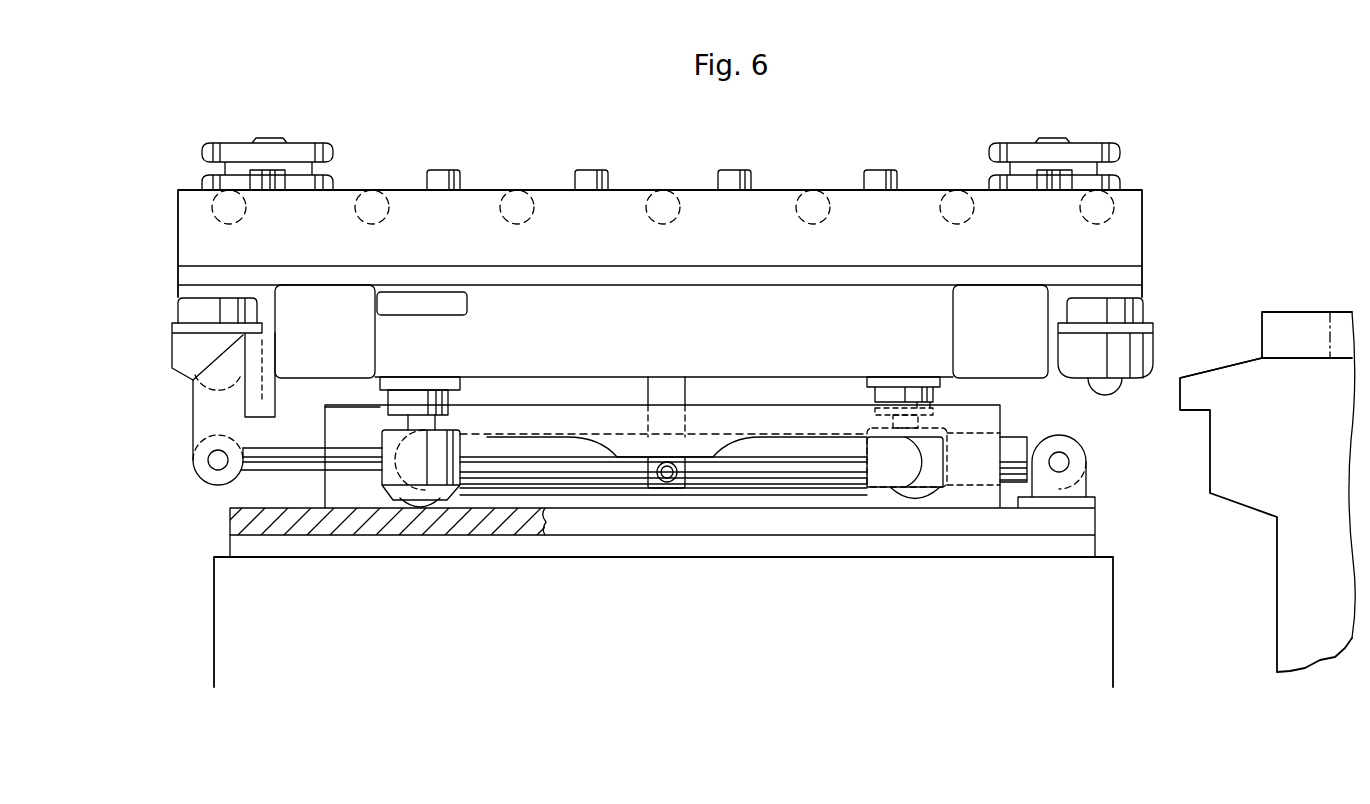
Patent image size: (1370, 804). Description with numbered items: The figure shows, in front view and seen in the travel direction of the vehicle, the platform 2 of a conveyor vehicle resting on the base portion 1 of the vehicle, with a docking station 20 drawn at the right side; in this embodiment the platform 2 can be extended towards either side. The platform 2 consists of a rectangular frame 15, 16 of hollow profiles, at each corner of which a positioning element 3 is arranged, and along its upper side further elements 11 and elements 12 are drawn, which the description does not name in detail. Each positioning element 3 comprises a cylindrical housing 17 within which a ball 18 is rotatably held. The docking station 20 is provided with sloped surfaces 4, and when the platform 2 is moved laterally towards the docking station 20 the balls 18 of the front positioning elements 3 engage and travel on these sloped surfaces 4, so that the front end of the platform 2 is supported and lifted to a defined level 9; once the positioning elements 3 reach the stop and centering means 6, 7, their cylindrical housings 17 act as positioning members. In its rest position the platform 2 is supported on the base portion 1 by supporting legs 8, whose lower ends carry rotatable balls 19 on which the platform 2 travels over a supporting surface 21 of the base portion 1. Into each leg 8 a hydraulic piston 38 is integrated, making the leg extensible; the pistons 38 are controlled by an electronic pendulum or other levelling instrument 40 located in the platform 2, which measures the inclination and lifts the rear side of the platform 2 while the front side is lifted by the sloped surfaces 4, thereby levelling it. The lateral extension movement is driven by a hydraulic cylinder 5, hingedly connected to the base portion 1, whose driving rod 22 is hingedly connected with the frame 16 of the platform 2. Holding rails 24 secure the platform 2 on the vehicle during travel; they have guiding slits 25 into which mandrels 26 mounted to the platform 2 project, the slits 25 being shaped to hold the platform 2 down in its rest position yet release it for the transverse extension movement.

The base portion 1 is at (663, 561).
The platform 2 is at (1148, 289).
The positioning elements 3 is at (165, 317).
The sloped surfaces 4 is at (1228, 362).
The hydraulic cylinder 5 is at (510, 483).
The stop and centering means 6 is at (1315, 302).
The stop and centering means 7 is at (1330, 305).
The supporting legs 8 is at (380, 385).
The defined level 9 is at (1290, 355).
The fastening bolts 11 is at (512, 198).
The clamping devices 12 is at (205, 130).
The frame 15 is at (605, 360).
The frame 16 is at (310, 362).
The cylindrical housing 17 is at (185, 348).
The ball 18 is at (193, 383).
The rolling balls 19 is at (430, 505).
The docking station 20 is at (1305, 475).
The supporting surface 21 is at (353, 527).
The driving rod 22 is at (295, 468).
The holding rails 24 is at (983, 495).
The guiding slits 25 is at (923, 458).
The mandrels 26 is at (669, 480).
The hydraulic piston 38 is at (435, 402).
The levelling instrument 40 is at (450, 303).